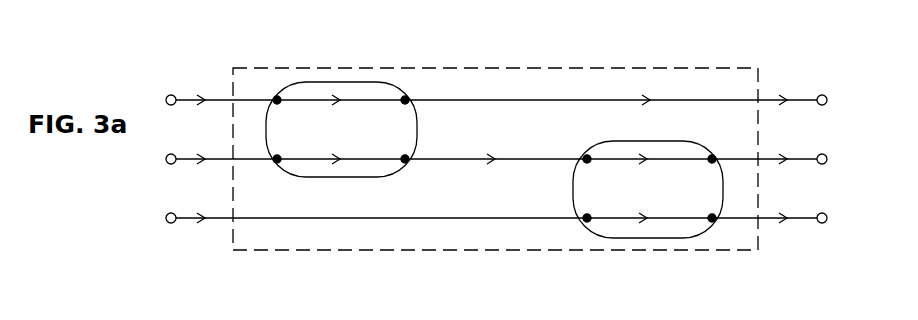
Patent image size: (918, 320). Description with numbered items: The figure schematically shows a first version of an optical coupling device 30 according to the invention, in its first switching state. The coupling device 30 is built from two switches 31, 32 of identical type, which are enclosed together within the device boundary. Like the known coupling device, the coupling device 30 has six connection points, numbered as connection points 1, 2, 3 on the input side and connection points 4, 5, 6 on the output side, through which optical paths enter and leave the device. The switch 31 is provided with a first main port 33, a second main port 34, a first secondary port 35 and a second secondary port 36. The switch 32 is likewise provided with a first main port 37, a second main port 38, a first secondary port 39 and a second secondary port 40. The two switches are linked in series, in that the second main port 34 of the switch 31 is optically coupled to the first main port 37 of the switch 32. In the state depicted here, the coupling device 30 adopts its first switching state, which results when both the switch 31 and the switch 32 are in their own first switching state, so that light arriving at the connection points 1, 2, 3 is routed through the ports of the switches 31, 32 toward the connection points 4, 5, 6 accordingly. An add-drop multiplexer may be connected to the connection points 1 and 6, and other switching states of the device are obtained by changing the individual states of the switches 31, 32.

The connection point 1 is at (204, 100).
The connection point 2 is at (204, 159).
The connection point 3 is at (357, 218).
The connection point 4 is at (836, 100).
The connection point 5 is at (836, 159).
The connection point 6 is at (836, 218).
The coupling device 30 is at (498, 70).
The switch 31 is at (342, 82).
The switch 32 is at (647, 238).
The first main port 33 is at (277, 100).
The second main port 34 is at (405, 159).
The first secondary port 35 is at (405, 100).
The second secondary port 36 is at (277, 159).
The first main port 37 is at (587, 159).
The second main port 38 is at (712, 218).
The first secondary port 39 is at (712, 159).
The second secondary port 40 is at (587, 218).